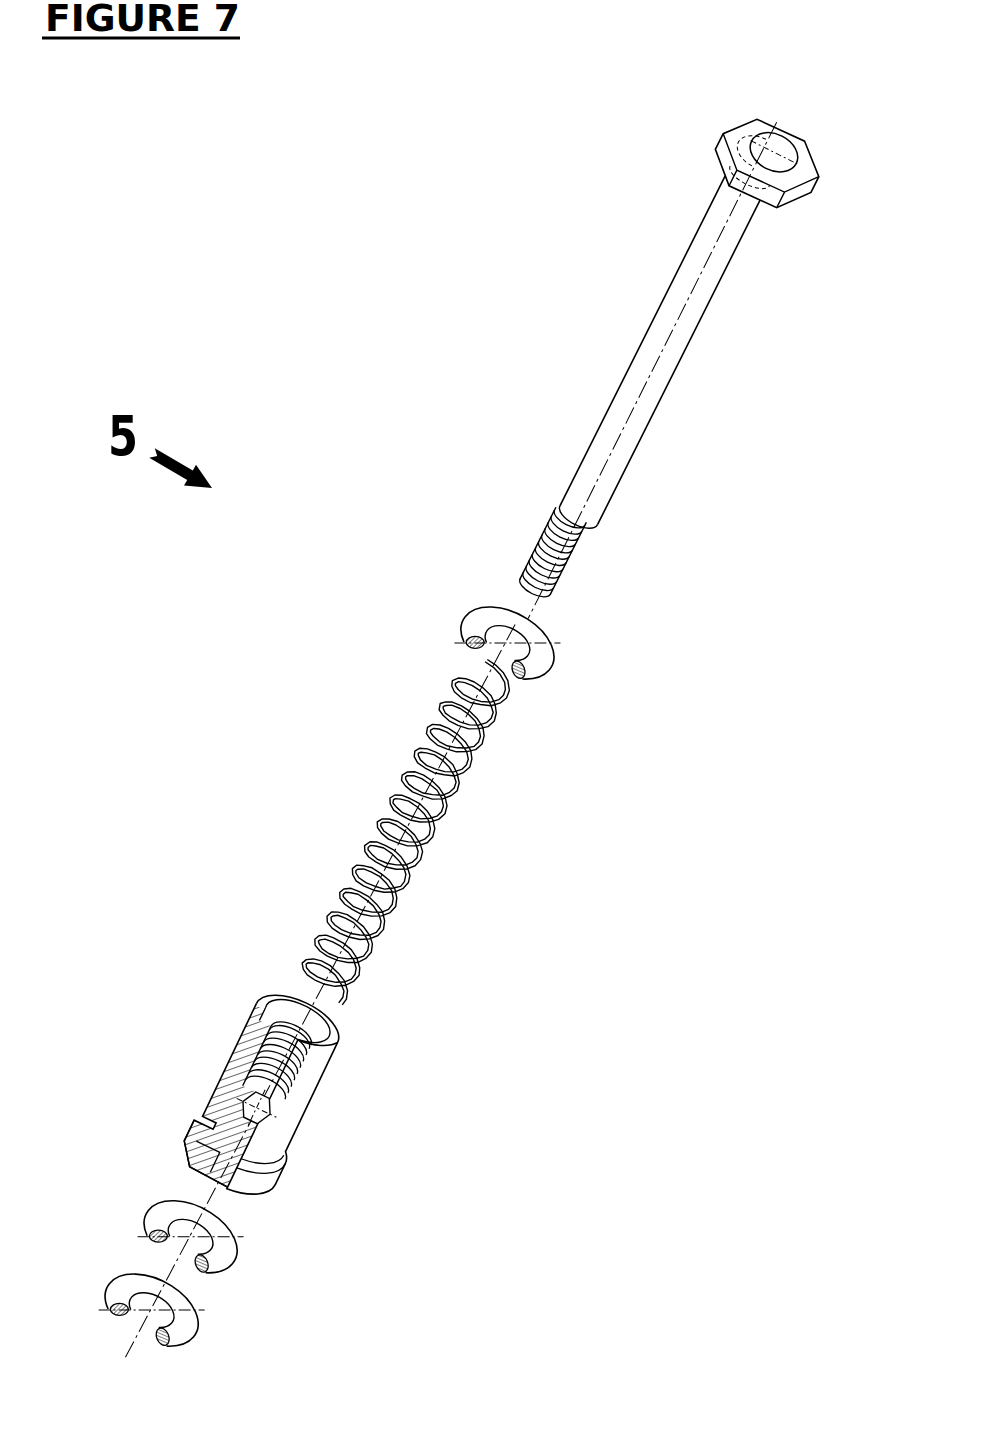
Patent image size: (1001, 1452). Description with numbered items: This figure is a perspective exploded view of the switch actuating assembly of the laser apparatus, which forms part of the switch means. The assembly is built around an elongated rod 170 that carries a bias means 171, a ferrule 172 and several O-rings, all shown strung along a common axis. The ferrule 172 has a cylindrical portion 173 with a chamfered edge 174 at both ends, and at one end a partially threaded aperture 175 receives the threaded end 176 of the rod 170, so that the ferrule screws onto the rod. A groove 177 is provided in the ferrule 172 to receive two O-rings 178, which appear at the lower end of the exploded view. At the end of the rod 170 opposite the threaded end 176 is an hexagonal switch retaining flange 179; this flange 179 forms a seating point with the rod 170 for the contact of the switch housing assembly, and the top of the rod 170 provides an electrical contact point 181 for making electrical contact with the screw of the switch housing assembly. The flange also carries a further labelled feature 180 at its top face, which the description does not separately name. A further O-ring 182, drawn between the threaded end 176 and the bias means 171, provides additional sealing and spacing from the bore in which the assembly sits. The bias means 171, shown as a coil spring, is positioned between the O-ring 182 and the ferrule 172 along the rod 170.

The elongated rod 170 is at (601, 335).
The bias means 171 is at (367, 823).
The ferrule 172 is at (228, 1036).
The cylindrical portion 173 is at (237, 1047).
The chamfered edge 174 is at (267, 995).
The partially threaded aperture 175 is at (317, 1027).
The threaded end 176 is at (529, 548).
The groove 177 is at (218, 1133).
The O-rings 178 is at (147, 1212).
The hexagonal switch retaining flange 179 is at (764, 122).
The bolt head top face 180 is at (801, 152).
The electrical contact point 181 is at (782, 141).
The O-ring 182 is at (462, 611).